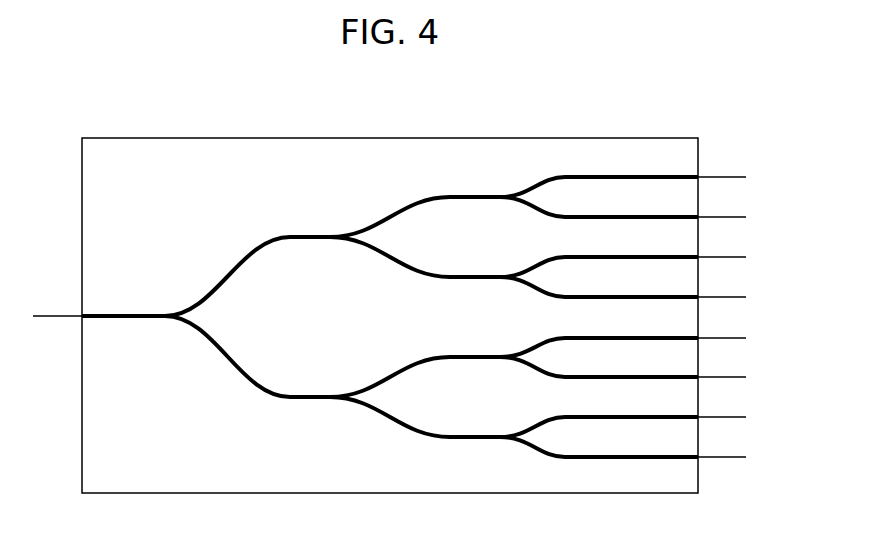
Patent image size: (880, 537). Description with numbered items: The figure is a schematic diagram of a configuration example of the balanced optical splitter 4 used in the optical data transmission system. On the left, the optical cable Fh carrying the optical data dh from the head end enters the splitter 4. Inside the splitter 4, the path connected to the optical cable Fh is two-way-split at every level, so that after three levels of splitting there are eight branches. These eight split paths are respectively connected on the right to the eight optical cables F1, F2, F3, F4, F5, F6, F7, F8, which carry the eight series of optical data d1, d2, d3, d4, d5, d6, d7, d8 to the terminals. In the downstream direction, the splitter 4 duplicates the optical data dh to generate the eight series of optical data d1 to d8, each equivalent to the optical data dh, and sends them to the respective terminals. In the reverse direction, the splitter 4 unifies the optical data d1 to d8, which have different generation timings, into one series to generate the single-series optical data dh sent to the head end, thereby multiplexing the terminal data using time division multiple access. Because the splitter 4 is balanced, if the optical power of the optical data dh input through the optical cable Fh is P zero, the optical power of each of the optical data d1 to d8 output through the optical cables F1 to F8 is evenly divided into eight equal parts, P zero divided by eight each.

The optical splitter 4 is at (478, 138).
The optical data dh is at (102, 303).
The optical cable Fh is at (42, 318).
The optical data d1 is at (615, 175).
The optical data d2 is at (615, 205).
The optical data d3 is at (615, 255).
The optical data d4 is at (615, 285).
The optical data d5 is at (615, 335).
The optical data d6 is at (615, 365).
The optical data d7 is at (615, 415).
The optical data d8 is at (615, 445).
The optical cable F1 is at (746, 177).
The optical cable F2 is at (746, 217).
The optical cable F3 is at (746, 257).
The optical cable F4 is at (746, 297).
The optical cable F5 is at (746, 338).
The optical cable F6 is at (746, 377).
The optical cable F7 is at (746, 417).
The optical cable F8 is at (746, 457).